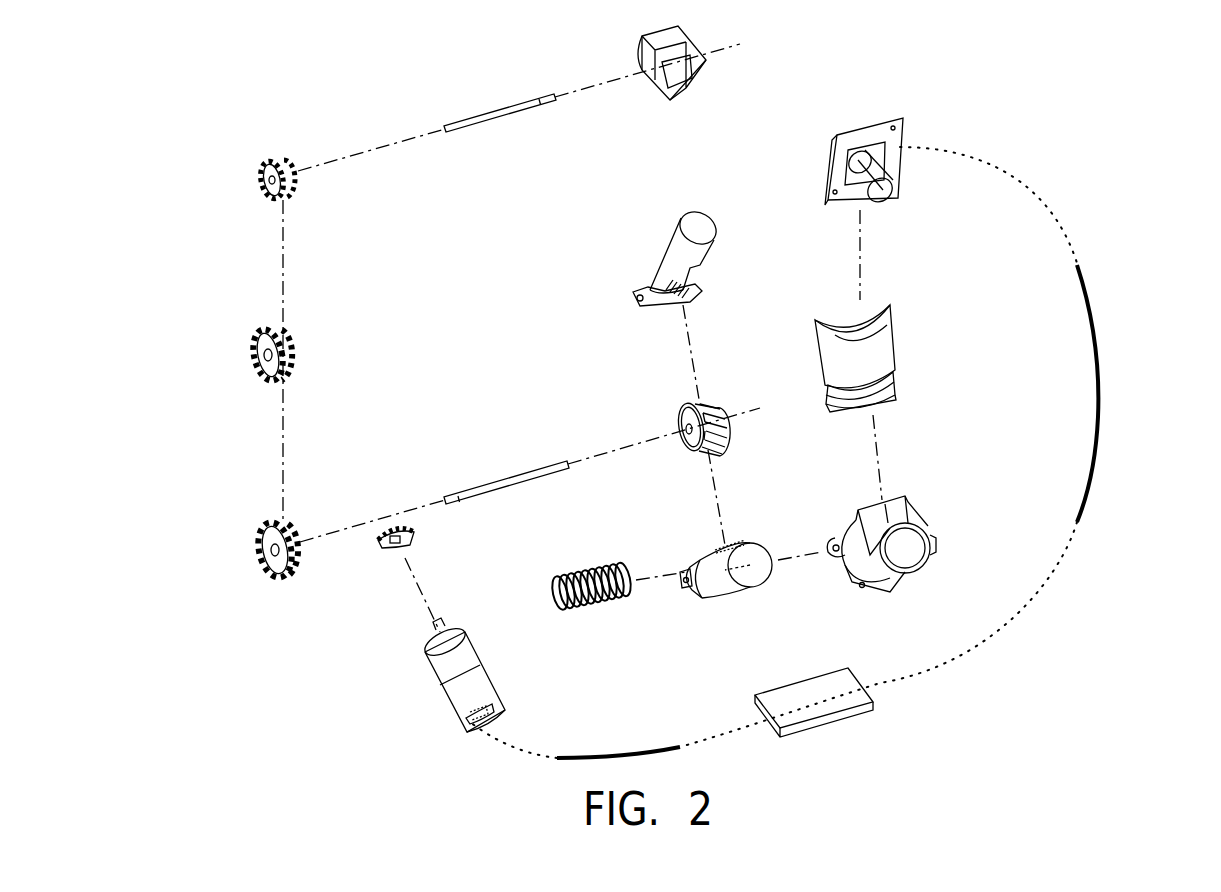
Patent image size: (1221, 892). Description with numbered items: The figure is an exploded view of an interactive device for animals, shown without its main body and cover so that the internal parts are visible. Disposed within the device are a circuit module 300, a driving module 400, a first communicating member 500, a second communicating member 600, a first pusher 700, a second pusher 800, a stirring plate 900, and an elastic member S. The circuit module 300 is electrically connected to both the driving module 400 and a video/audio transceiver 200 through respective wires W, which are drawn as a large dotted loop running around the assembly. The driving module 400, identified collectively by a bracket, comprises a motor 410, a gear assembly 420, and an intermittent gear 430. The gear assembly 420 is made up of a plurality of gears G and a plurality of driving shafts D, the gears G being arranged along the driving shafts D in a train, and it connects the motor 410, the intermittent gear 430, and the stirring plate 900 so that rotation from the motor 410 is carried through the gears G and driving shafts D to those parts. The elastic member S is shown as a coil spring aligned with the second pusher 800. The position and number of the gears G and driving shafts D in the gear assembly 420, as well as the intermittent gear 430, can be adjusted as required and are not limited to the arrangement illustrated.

The video/audio transceiver 200 is at (890, 182).
The circuit module 300 is at (805, 690).
The driving module 400 is at (1143, 132).
The motor 410 is at (462, 650).
The gear assembly 420 is at (353, 133).
The intermittent gear 430 is at (713, 416).
The first communicating member 500 is at (880, 350).
The second communicating member 600 is at (905, 548).
The first pusher 700 is at (700, 232).
The second pusher 800 is at (752, 558).
The stirring plate 900 is at (655, 78).
The gears G is at (258, 180).
The driving shafts D is at (500, 110).
The elastic member S is at (600, 580).
The wires W is at (1100, 420).